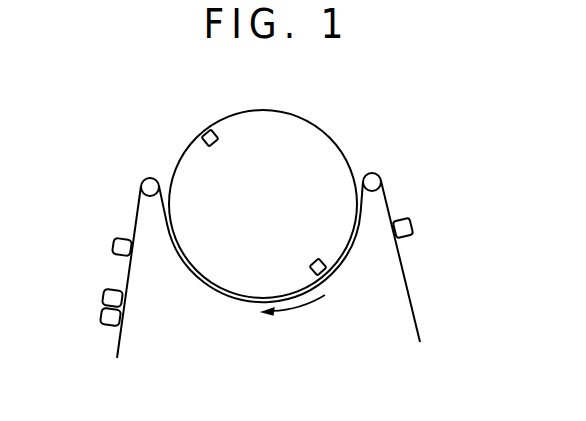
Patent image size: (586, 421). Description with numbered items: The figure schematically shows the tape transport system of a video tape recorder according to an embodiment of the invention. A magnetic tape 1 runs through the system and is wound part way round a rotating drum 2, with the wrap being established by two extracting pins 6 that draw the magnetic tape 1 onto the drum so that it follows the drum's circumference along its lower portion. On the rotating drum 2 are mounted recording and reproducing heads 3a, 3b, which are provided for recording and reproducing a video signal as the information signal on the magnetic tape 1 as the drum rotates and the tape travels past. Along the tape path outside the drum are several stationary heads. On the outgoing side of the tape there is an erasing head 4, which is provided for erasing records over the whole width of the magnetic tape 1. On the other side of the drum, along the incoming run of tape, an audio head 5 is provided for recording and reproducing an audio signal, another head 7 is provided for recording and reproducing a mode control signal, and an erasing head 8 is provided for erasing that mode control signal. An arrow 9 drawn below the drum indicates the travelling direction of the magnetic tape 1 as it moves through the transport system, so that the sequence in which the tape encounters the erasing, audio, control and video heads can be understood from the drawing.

The magnetic tape 1 is at (404, 270).
The rotating drum 2 is at (311, 135).
The recording and reproducing head 3a is at (218, 127).
The recording and reproducing head 3b is at (325, 258).
The erasing head 4 is at (412, 224).
The audio head 5 is at (117, 240).
The extracting pins 6 is at (151, 177).
The head 7 is at (101, 316).
The erasing head 8 is at (103, 296).
The arrow 9 is at (308, 303).